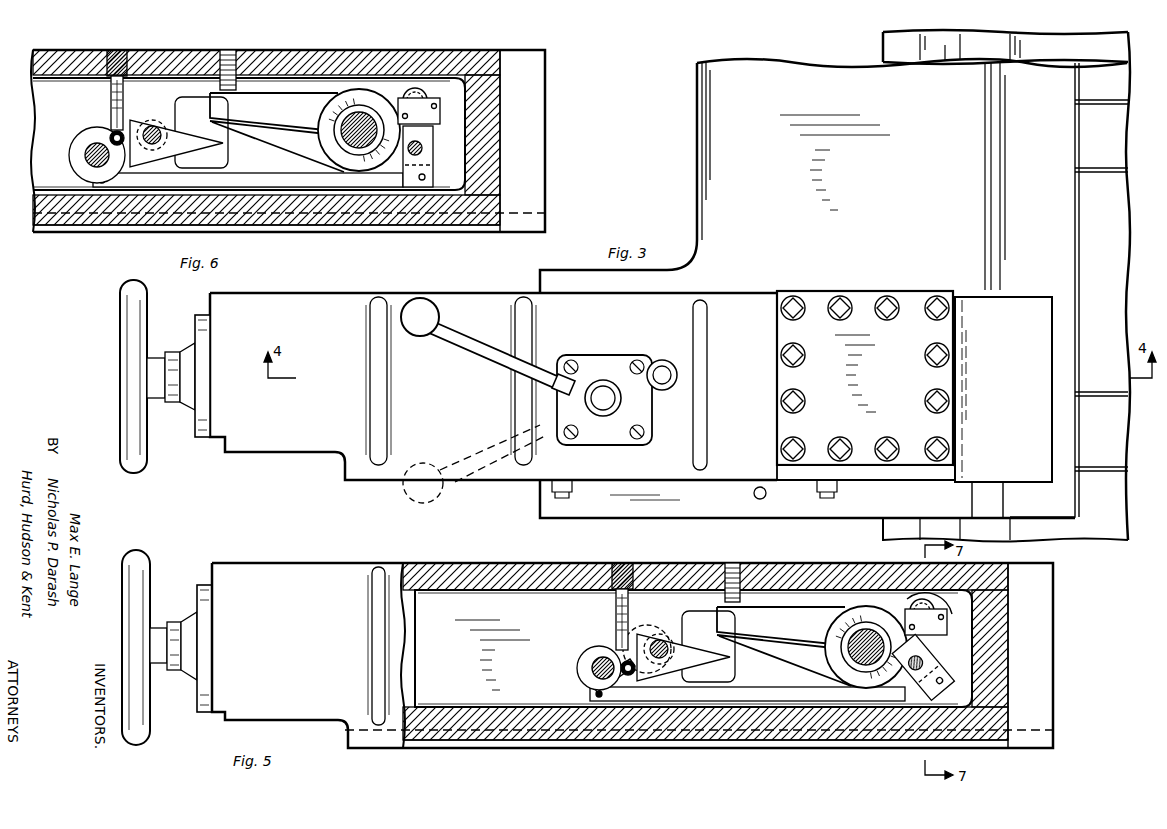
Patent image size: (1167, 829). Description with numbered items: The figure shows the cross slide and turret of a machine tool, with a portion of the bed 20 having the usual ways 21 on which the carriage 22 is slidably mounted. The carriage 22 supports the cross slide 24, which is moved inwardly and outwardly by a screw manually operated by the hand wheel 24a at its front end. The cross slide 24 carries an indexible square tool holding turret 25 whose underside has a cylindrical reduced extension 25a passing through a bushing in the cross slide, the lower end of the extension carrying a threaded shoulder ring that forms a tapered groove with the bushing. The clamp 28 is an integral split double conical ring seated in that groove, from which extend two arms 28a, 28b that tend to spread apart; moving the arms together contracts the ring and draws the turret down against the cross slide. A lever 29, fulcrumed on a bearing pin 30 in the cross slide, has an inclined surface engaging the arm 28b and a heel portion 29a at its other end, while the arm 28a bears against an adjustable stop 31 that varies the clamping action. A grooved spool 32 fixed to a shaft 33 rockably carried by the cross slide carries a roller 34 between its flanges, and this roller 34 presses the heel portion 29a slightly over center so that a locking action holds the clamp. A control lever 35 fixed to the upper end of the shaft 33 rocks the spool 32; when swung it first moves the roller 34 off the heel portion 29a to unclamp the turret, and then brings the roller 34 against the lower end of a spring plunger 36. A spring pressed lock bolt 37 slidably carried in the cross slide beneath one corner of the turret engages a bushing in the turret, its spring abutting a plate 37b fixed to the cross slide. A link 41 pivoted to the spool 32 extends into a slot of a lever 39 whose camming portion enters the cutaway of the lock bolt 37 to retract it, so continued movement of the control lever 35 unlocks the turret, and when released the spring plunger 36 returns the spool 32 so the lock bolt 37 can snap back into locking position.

In FIG. 3, the bed 20 is at (1112, 256).
In FIG. 3, the ways 21 is at (893, 46).
In FIG. 3, the carriage 22 is at (697, 107).
In FIG. 6, the cross slide 24 is at (413, 228).
In FIG. 3, the cross slide 24 is at (328, 314).
In FIG. 5, the cross slide 24 is at (487, 582).
In FIG. 3, the hand wheel 24a is at (126, 308).
In FIG. 5, the hand wheel 24a is at (146, 566).
In FIG. 3, the turret 25 is at (914, 386).
In FIG. 5, the cylindrical reduced extension 25a is at (864, 608).
In FIG. 6, the clamp 28 is at (305, 130).
In FIG. 5, the clamp 28 is at (812, 691).
In FIG. 6, the arm 28a is at (272, 105).
In FIG. 5, the arm 28a is at (779, 623).
In FIG. 6, the arm 28b is at (272, 134).
In FIG. 5, the arm 28b is at (779, 651).
In FIG. 6, the lever 29 is at (185, 150).
In FIG. 5, the lever 29 is at (686, 637).
In FIG. 5, the heel portion 29a is at (635, 716).
In FIG. 3, the bearing pin 30 is at (663, 367).
In FIG. 5, the bearing pin 30 is at (647, 633).
In FIG. 6, the adjustable stop 31 is at (232, 52).
In FIG. 5, the adjustable stop 31 is at (741, 569).
In FIG. 6, the grooved spool 32 is at (72, 140).
In FIG. 5, the grooved spool 32 is at (579, 668).
In FIG. 6, the shaft 33 is at (90, 156).
In FIG. 3, the shaft 33 is at (607, 385).
In FIG. 5, the shaft 33 is at (578, 674).
In FIG. 6, the roller 34 is at (122, 132).
In FIG. 5, the roller 34 is at (594, 654).
In FIG. 3, the control lever 35 is at (478, 344).
In FIG. 6, the spring plunger 36 is at (109, 105).
In FIG. 5, the spring plunger 36 is at (598, 606).
In FIG. 6, the lock bolt 37 is at (412, 88).
In FIG. 5, the lock bolt 37 is at (916, 592).
In FIG. 5, the plate 37b is at (973, 603).
In FIG. 6, the lever 39 is at (433, 142).
In FIG. 5, the lever 39 is at (962, 667).
In FIG. 6, the link 41 is at (236, 182).
In FIG. 5, the link 41 is at (747, 731).